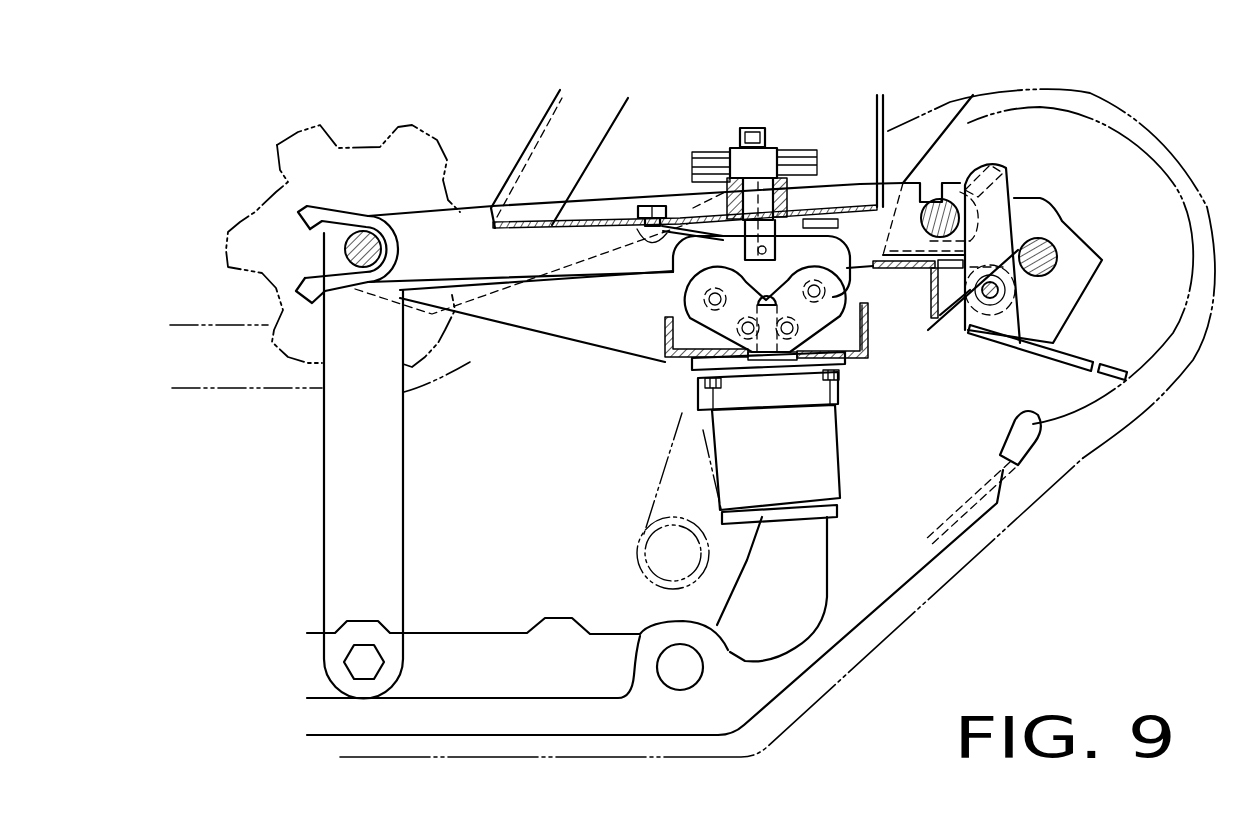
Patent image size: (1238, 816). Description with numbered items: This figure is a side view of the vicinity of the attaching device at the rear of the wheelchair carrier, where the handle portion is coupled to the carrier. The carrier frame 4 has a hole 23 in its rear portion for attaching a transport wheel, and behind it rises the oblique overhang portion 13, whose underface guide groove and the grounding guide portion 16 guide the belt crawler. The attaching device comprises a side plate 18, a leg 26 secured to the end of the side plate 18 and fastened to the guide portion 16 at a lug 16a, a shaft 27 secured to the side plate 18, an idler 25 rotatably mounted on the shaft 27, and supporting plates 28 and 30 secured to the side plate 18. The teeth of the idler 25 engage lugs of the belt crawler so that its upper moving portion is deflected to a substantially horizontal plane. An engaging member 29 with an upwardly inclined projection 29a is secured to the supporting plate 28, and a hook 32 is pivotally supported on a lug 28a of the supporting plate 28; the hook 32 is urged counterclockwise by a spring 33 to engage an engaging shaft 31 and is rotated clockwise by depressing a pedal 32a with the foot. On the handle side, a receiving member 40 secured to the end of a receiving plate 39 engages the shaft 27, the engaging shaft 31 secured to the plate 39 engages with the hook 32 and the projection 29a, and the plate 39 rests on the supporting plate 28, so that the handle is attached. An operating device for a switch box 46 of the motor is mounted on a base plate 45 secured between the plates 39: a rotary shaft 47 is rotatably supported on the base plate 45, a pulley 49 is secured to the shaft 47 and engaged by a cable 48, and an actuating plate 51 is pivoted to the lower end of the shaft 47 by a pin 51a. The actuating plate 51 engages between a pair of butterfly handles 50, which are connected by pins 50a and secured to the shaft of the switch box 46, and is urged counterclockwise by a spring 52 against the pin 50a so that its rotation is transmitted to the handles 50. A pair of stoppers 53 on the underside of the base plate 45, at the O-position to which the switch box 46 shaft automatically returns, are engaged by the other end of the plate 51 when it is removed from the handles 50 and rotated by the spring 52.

The frame 4 is at (551, 739).
The oblique overhang portion 13 is at (853, 623).
The grounding guide portion 16 is at (320, 717).
The lug 16a is at (320, 631).
The side plate 18 is at (582, 327).
The hole 23 is at (680, 688).
The idler 25 is at (283, 179).
The leg 26 is at (326, 438).
The shaft 27 is at (342, 249).
The supporting plate 28 is at (888, 269).
The lug 28a is at (963, 340).
The engaging member 29 is at (930, 197).
The upwardly inclined projection 29a is at (1005, 175).
The supporting plate 30 is at (677, 368).
The engaging shaft 31 is at (941, 197).
The hook 32 is at (993, 153).
The pedal 32a is at (1082, 354).
The spring 33 is at (1036, 243).
The receiving plate 39 is at (456, 216).
The receiving member 40 is at (327, 217).
The base plate 45 is at (690, 214).
The switch box 46 is at (838, 503).
The rotary shaft 47 is at (822, 181).
The cable 48 is at (818, 157).
The pulley 49 is at (790, 150).
The butterfly handle 50 is at (661, 336).
The pin 50a is at (745, 385).
The actuating plate 51 is at (650, 283).
The pin 51a is at (748, 253).
The spring 52 is at (630, 213).
The stopper 53 is at (891, 345).